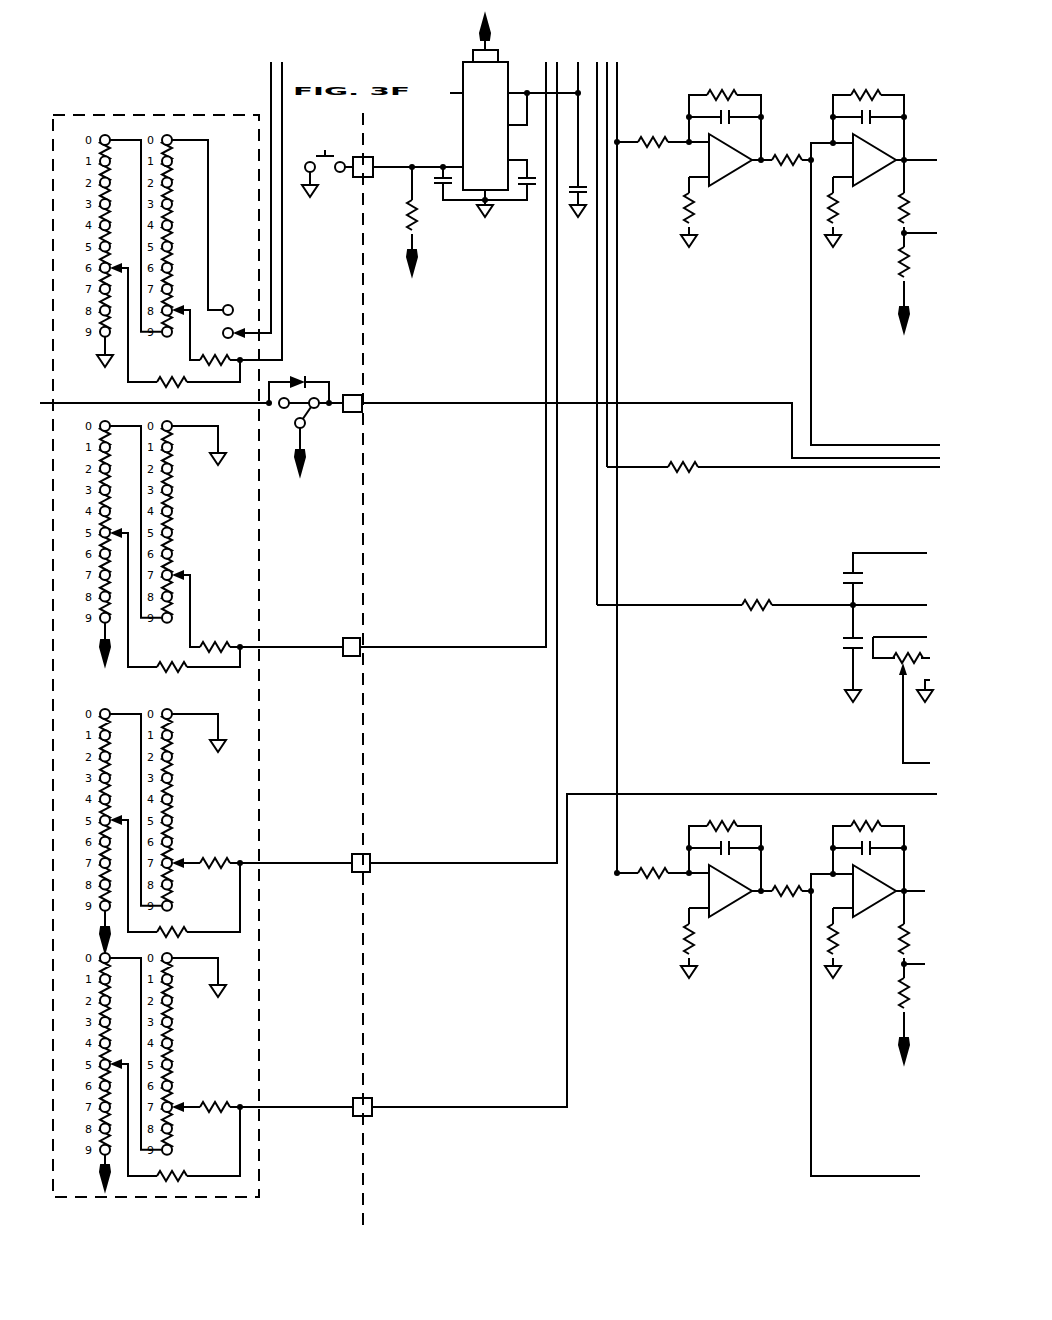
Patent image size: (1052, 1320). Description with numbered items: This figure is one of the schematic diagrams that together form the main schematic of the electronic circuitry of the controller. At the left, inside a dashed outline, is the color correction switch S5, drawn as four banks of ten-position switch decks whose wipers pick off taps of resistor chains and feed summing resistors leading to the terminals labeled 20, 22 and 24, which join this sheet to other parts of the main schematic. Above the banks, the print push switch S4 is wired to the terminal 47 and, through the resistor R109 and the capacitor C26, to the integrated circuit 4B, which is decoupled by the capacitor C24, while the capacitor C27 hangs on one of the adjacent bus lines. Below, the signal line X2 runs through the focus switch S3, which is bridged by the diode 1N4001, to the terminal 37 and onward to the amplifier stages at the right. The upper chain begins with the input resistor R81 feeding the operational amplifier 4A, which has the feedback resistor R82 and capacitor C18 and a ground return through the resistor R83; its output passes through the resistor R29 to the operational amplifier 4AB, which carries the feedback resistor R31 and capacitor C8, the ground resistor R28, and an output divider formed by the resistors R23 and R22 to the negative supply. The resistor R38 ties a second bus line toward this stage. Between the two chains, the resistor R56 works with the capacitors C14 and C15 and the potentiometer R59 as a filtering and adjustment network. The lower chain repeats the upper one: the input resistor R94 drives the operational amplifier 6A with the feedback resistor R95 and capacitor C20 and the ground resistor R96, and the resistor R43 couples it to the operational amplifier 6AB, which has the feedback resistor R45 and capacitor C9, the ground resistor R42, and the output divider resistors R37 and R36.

The color correction switch S5 is at (203, 629).
The print push switch S4 is at (326, 155).
The focus switch S3 is at (309, 440).
The connection point 47 is at (408, 167).
The connection point 37 is at (634, 426).
The null meter 20 is at (444, 359).
The density and color value input switch 22 is at (454, 467).
The density and color value input switch 24 is at (645, 955).
The signal line X2 is at (152, 394).
The diode 1N4001 is at (301, 380).
The resistor 10K R109 is at (408, 220).
The capacitor C26 is at (455, 177).
The capacitor C24 is at (512, 190).
The capacitor C27 is at (582, 150).
The timer IC 4B is at (515, 116).
The resistor 4.7K R81 is at (653, 143).
The feedback resistor 10K R82 is at (726, 119).
The feedback capacitor C18 is at (725, 115).
The resistor 8.2K R83 is at (702, 212).
The operational amplifier 4A is at (725, 160).
The resistor 7.5K R29 is at (787, 163).
The feedback resistor 100K R31 is at (868, 118).
The feedback capacitor C8 is at (868, 115).
The resistor 2.4K R28 is at (846, 212).
The operational amplifier 4AB is at (885, 160).
The resistor 750 R23 is at (907, 198).
The resistor 30K R22 is at (883, 282).
The resistor 2.4K R38 is at (773, 470).
The resistor 1K R56 is at (762, 606).
The capacitor 220PF C14 is at (885, 579).
The capacitor .1 C15 is at (836, 653).
The potentiometer 2K R59 is at (904, 700).
The resistor 4.7K R94 is at (653, 874).
The feedback resistor 10K R95 is at (726, 850).
The feedback capacitor C20 is at (725, 846).
The resistor 8.2K R96 is at (702, 943).
The operational amplifier 6A is at (725, 891).
The resistor 7.5K R43 is at (787, 894).
The feedback resistor 100K R45 is at (868, 849).
The feedback capacitor C9 is at (868, 846).
The resistor 2.4K R42 is at (846, 943).
The operational amplifier 6AB is at (879, 891).
The resistor 750 R37 is at (915, 929).
The resistor 30K R36 is at (885, 1013).